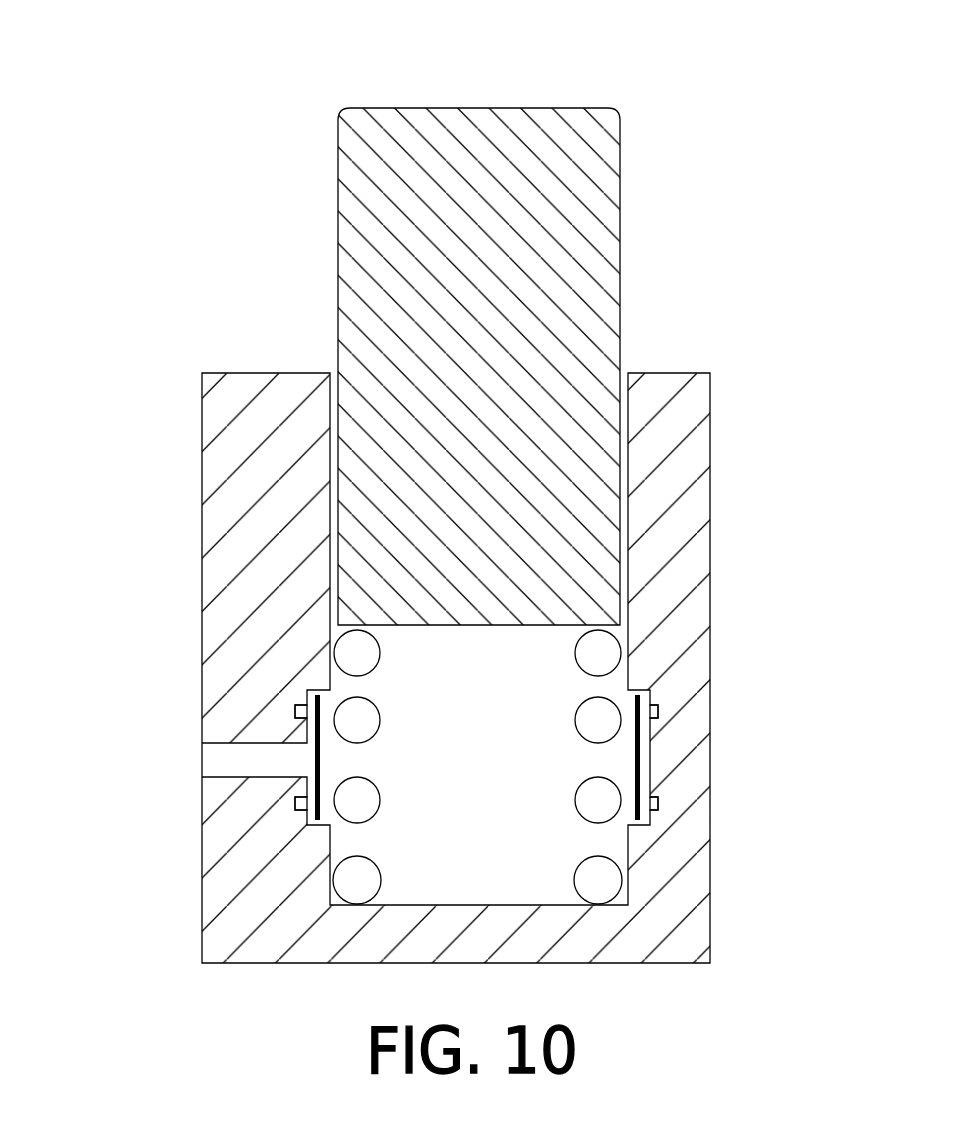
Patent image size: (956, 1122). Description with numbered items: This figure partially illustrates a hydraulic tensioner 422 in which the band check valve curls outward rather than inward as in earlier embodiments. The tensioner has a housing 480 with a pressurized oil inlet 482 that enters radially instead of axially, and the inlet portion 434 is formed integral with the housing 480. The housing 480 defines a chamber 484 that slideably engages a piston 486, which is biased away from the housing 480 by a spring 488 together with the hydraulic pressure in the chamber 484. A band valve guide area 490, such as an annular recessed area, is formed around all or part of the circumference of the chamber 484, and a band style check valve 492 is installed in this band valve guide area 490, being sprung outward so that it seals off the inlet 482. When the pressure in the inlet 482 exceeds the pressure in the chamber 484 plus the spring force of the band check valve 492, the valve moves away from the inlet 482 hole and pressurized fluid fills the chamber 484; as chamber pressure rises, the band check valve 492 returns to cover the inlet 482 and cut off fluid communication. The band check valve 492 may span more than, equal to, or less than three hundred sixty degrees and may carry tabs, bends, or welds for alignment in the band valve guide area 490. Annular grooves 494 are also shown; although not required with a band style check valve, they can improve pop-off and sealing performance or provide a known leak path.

The hydraulic tensioner 422 is at (713, 141).
The inlet portion 434 is at (128, 726).
The housing 480 is at (710, 650).
The pressurized oil inlet 482 is at (232, 761).
The chamber 484 is at (488, 700).
The piston 486 is at (473, 108).
The spring 488 is at (590, 655).
The band valve guide area 490 is at (352, 759).
The band style check valve 492 is at (320, 703).
The annular grooves 494 is at (297, 717).